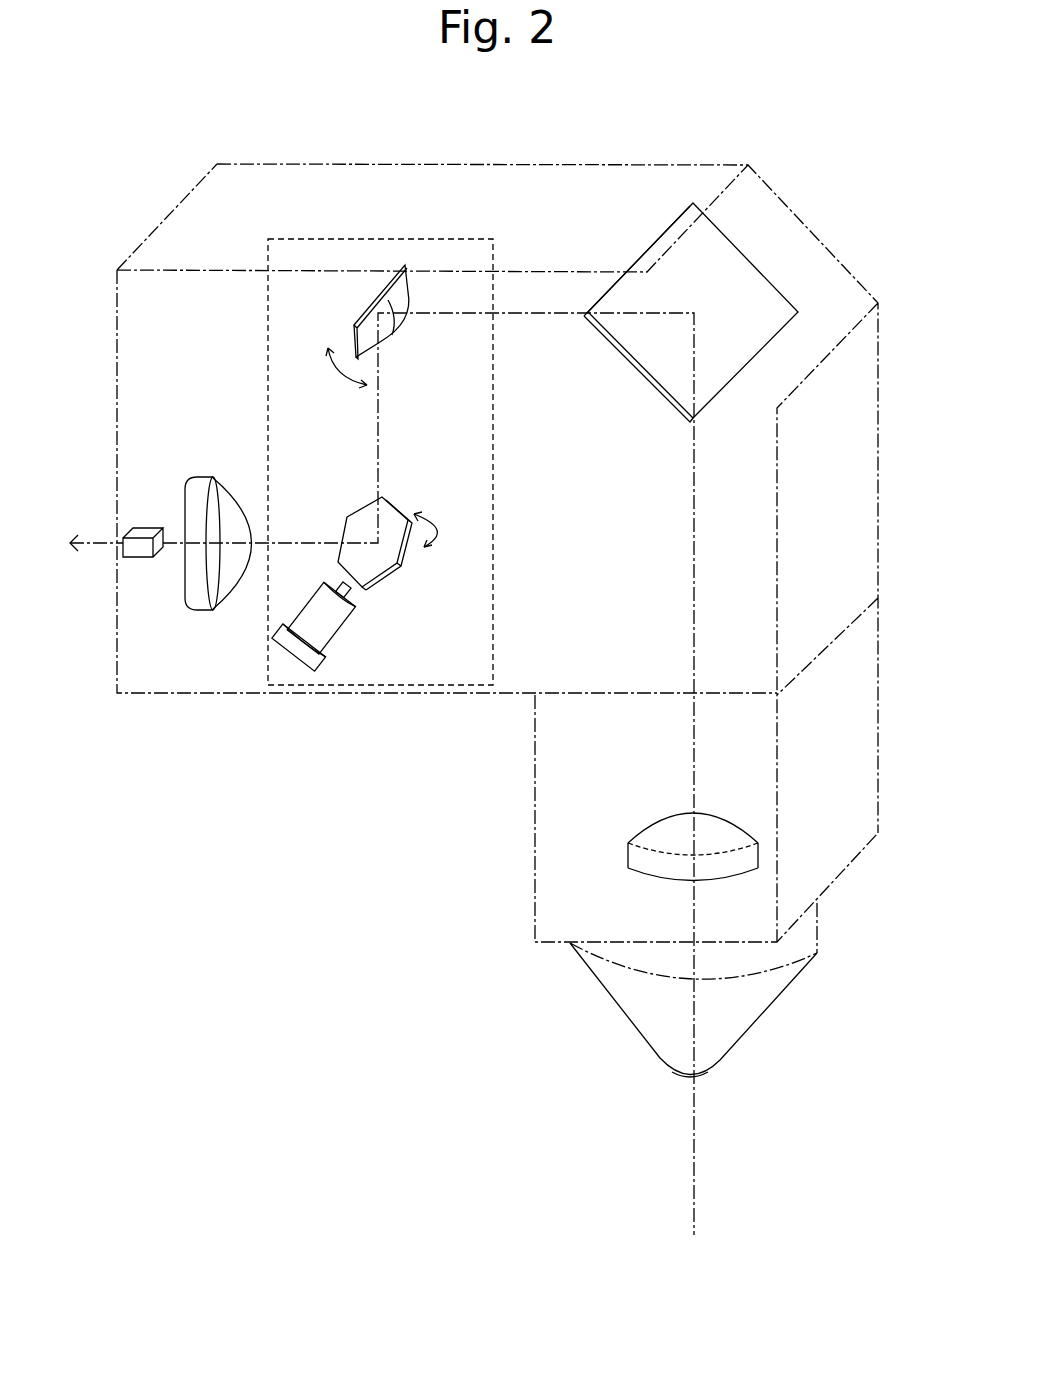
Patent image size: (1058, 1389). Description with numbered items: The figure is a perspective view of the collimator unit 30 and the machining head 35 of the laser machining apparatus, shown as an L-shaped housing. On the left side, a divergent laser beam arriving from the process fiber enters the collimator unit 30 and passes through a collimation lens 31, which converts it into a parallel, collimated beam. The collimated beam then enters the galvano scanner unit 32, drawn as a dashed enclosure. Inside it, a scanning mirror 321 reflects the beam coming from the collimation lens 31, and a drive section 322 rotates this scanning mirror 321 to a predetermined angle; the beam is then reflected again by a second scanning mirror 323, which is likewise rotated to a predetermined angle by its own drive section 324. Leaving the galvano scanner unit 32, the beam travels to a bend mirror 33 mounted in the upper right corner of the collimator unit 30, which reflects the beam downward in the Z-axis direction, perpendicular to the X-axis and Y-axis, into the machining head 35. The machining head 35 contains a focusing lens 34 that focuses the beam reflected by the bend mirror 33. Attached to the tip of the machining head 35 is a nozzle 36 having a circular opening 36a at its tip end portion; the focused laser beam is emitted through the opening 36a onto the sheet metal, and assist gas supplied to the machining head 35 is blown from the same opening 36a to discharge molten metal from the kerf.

The collimator unit 30 is at (568, 187).
The collimation lens 31 is at (209, 476).
The galvano scanner unit 32 is at (362, 690).
The scanning mirror 321 is at (362, 513).
The drive section 322 is at (327, 631).
The scanning mirror 323 is at (403, 287).
The drive section 324 is at (360, 303).
The bend mirror 33 is at (680, 225).
The focusing lens 34 is at (740, 823).
The machining head 35 is at (848, 767).
The nozzle 36 is at (782, 1000).
The opening 36a is at (700, 1080).